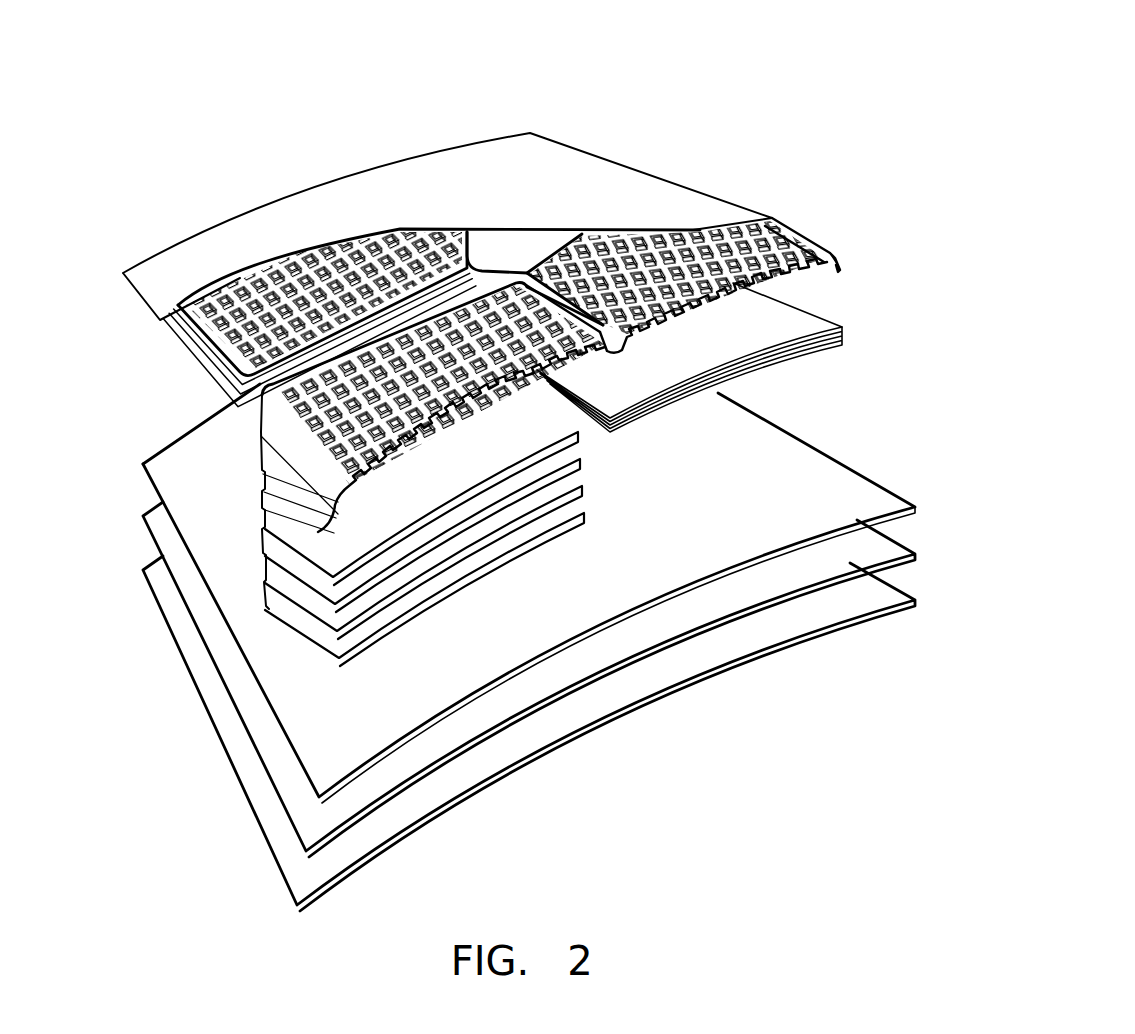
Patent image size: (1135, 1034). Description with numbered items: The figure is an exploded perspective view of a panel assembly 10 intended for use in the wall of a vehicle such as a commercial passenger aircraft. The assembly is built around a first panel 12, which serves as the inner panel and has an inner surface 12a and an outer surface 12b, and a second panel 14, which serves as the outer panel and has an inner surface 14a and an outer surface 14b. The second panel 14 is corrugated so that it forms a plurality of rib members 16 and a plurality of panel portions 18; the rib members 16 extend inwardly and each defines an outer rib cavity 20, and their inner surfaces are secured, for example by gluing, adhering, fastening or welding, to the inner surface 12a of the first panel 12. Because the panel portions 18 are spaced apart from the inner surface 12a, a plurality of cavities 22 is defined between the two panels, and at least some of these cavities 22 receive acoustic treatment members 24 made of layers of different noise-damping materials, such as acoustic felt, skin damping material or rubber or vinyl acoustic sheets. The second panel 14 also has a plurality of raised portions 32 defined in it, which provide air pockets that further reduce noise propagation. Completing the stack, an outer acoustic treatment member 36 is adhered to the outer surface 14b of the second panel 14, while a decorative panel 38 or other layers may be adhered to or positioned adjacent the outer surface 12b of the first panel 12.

The panel assembly 10 is at (760, 122).
The first panel 12 is at (300, 692).
The inner surface of first panel 12a is at (465, 675).
The outer surface of first panel 12b is at (501, 683).
The second panel 14 is at (790, 242).
The inner surface of second panel 14a is at (762, 300).
The outer surface of second panel 14b is at (810, 252).
The rib members 16 is at (210, 390).
The panel portions 18 is at (485, 245).
The outer rib cavity 20 is at (300, 365).
The cavities 22 is at (318, 532).
The acoustic treatment members 24 is at (803, 323).
The raised portions 32 is at (688, 250).
The outer acoustic treatment member 36 is at (430, 178).
The decorative panel 38 is at (308, 878).